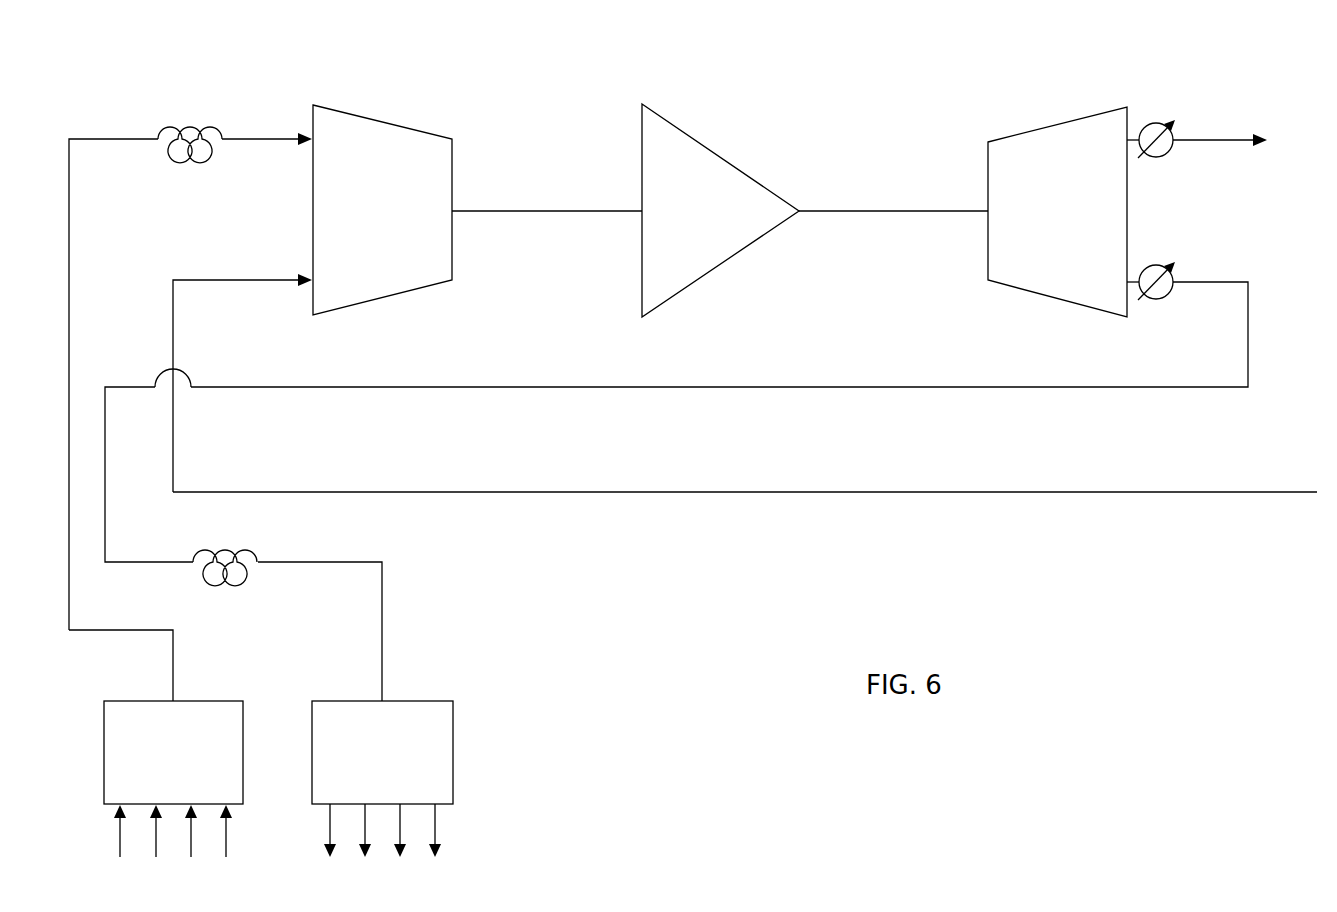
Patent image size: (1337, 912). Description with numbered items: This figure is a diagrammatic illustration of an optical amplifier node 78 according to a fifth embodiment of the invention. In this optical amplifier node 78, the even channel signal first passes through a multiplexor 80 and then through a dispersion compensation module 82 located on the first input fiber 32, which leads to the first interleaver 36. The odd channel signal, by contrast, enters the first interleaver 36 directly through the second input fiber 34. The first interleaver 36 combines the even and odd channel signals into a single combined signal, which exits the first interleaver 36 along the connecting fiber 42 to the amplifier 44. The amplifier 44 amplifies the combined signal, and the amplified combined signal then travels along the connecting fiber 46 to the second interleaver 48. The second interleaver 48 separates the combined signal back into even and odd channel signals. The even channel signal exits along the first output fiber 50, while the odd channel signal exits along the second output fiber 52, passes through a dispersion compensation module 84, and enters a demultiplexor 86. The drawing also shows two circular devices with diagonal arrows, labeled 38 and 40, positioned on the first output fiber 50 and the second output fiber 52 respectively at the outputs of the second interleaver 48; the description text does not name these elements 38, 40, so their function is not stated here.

The first input fiber 32 is at (278, 138).
The second input fiber 34 is at (191, 279).
The first interleaver 36 is at (392, 225).
The first variable optical attenuator 38 is at (1157, 123).
The second variable optical attenuator 40 is at (1157, 300).
The connecting fiber 42 is at (573, 209).
The amplifier 44 is at (707, 225).
The connecting fiber 46 is at (920, 208).
The second interleaver 48 is at (1071, 225).
The first output fiber 50 is at (1182, 137).
The second output fiber 52 is at (1187, 278).
The optical amplifier node 78 is at (631, 612).
The multiplexor 80 is at (187, 766).
The dispersion compensation module 82 is at (185, 120).
The dispersion compensation module 84 is at (258, 543).
The demultiplexor 86 is at (392, 766).